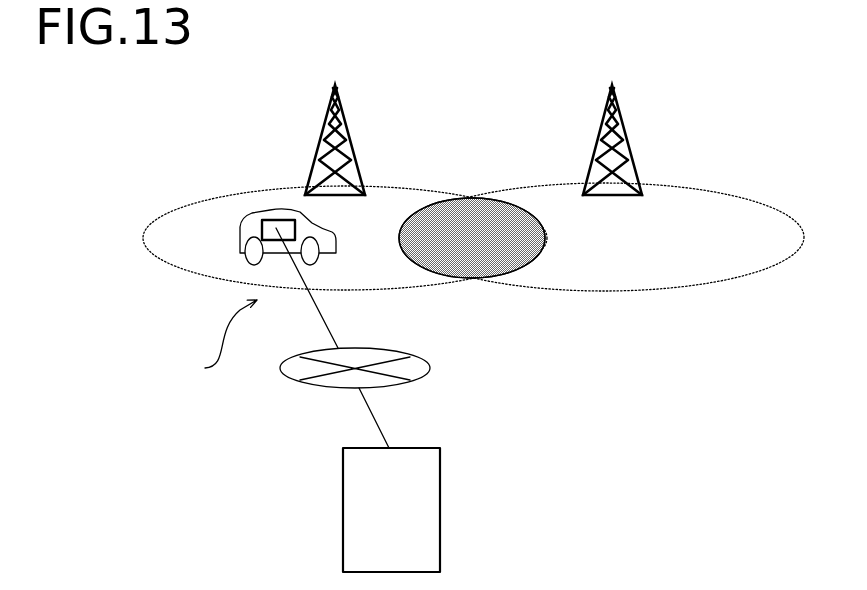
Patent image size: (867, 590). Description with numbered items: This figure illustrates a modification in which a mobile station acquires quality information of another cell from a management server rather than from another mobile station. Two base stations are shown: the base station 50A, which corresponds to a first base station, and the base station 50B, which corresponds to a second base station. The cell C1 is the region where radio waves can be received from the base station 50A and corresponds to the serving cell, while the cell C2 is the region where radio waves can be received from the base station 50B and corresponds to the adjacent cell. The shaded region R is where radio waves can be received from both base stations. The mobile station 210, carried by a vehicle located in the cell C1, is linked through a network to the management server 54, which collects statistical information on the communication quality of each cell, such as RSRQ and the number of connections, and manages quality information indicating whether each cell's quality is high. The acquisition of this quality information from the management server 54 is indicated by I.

The base station 50A is at (336, 84).
The base station 50B is at (613, 84).
The cell C1 is at (206, 197).
The cell C2 is at (722, 194).
The shaded region R is at (483, 208).
The mobile station 210 is at (273, 225).
The management server 54 is at (428, 448).
The acquisition of quality information from the management server I is at (221, 341).